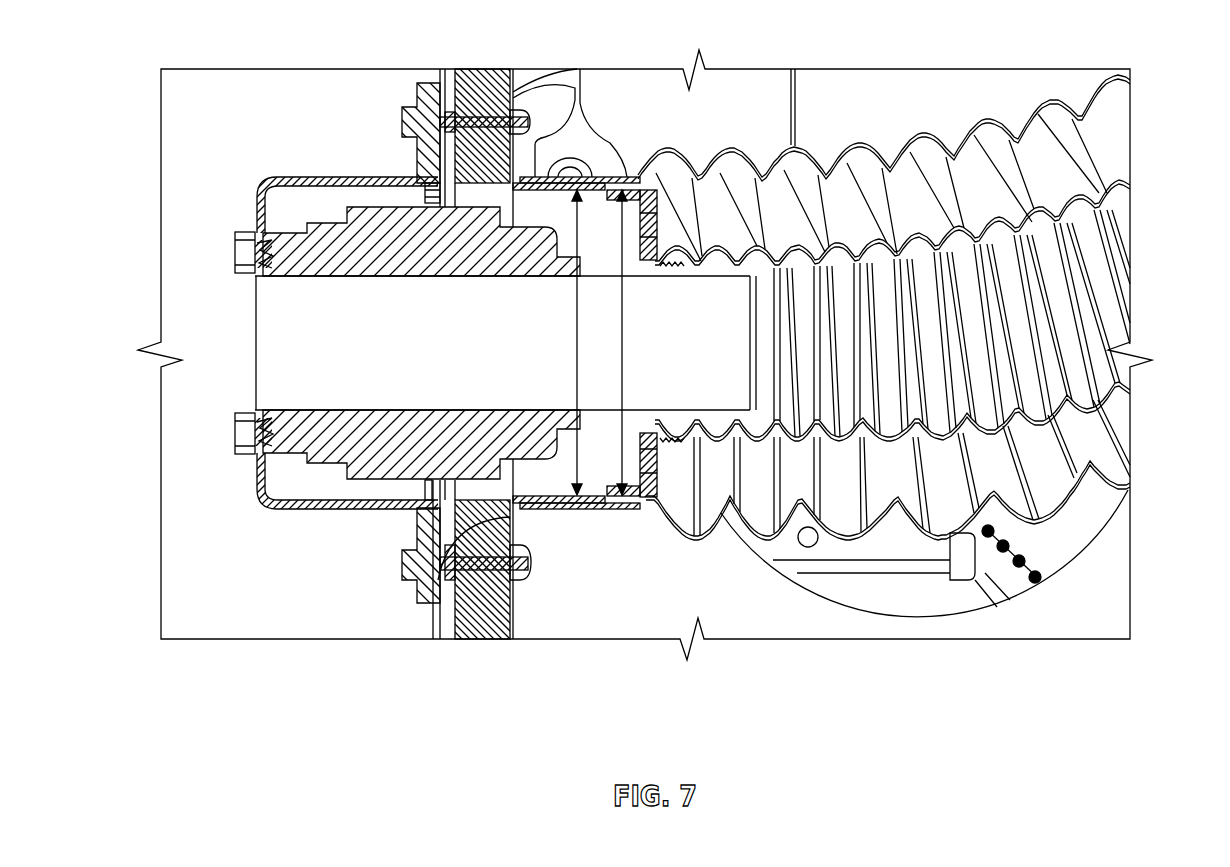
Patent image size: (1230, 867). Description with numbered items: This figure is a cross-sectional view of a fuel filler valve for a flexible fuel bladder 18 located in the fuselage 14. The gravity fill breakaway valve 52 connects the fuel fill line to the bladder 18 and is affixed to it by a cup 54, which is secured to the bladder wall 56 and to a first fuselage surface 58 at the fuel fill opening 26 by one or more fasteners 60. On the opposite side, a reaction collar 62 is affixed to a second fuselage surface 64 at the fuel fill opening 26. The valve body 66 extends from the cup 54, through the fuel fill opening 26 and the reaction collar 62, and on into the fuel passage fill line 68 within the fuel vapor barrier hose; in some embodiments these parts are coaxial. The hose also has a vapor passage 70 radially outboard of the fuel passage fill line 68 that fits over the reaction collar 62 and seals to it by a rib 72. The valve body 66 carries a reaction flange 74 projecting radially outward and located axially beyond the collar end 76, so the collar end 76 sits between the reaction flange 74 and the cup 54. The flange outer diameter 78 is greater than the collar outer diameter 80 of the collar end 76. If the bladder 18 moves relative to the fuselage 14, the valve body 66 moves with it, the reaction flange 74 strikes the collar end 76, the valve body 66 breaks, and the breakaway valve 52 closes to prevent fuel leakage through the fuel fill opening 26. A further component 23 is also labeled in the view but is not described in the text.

The fuel bladder 18 is at (314, 130).
The fuselage 14 is at (510, 113).
The bladder wall 56 is at (437, 83).
The fuel fill opening 26 is at (512, 122).
The cup 54 is at (264, 190).
The collar outer diameter 80 is at (575, 330).
The flange outer diameter 78 is at (630, 322).
The fuel passage fill line 68 is at (1118, 265).
The vapor passage 70 is at (1118, 445).
The valve body 66 is at (432, 422).
The gravity fill breakaway valve 52 is at (330, 457).
The second fuselage surface 64 is at (402, 565).
The reaction collar 62 is at (567, 515).
The rib 72 is at (598, 510).
The collar end 76 is at (637, 508).
The reaction flange 74 is at (650, 487).
The actuator linkage 23 is at (950, 530).
The first fuselage surface 58 is at (427, 607).
The fasteners 60 is at (457, 639).